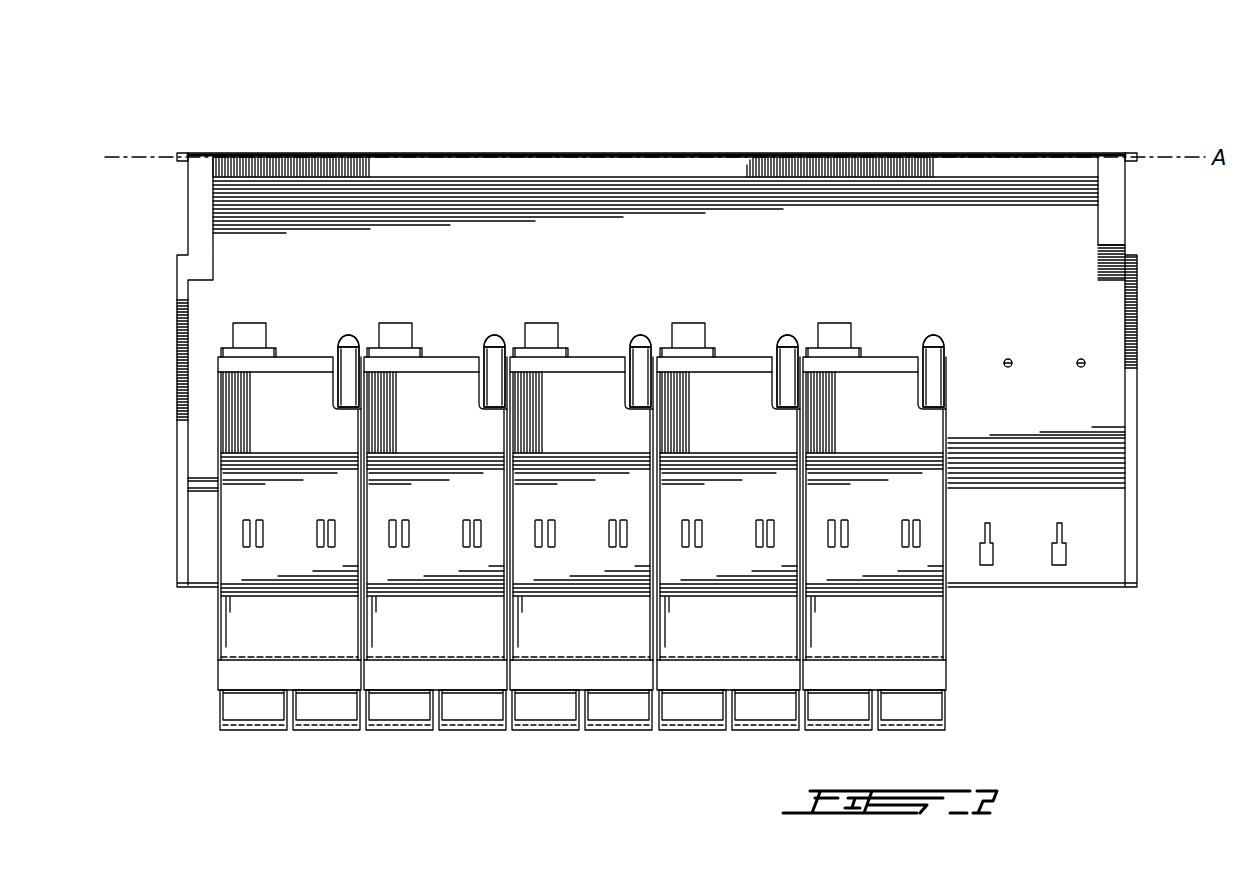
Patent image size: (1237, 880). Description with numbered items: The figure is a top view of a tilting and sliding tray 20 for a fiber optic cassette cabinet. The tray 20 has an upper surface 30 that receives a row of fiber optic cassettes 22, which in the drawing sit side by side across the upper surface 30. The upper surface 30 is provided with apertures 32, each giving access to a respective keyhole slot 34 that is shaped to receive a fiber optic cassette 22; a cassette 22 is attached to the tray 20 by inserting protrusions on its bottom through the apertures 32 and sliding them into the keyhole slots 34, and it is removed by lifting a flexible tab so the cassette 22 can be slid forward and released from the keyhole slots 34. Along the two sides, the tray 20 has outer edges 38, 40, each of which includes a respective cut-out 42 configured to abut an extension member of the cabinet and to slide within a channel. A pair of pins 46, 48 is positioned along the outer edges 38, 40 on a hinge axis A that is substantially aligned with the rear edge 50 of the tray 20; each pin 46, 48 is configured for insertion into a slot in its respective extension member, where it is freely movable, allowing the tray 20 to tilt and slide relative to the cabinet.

The tray 20 is at (219, 127).
The fiber optic cassettes 22 is at (255, 712).
The upper surface 30 is at (398, 207).
The apertures 32 is at (1080, 358).
The keyhole slots 34 is at (1057, 557).
The outer edge 38 is at (934, 334).
The outer edge 40 is at (1138, 440).
The cut-out 42 is at (188, 217).
The pin 46 is at (176, 161).
The pin 48 is at (1130, 152).
The rear edge 50 is at (568, 152).